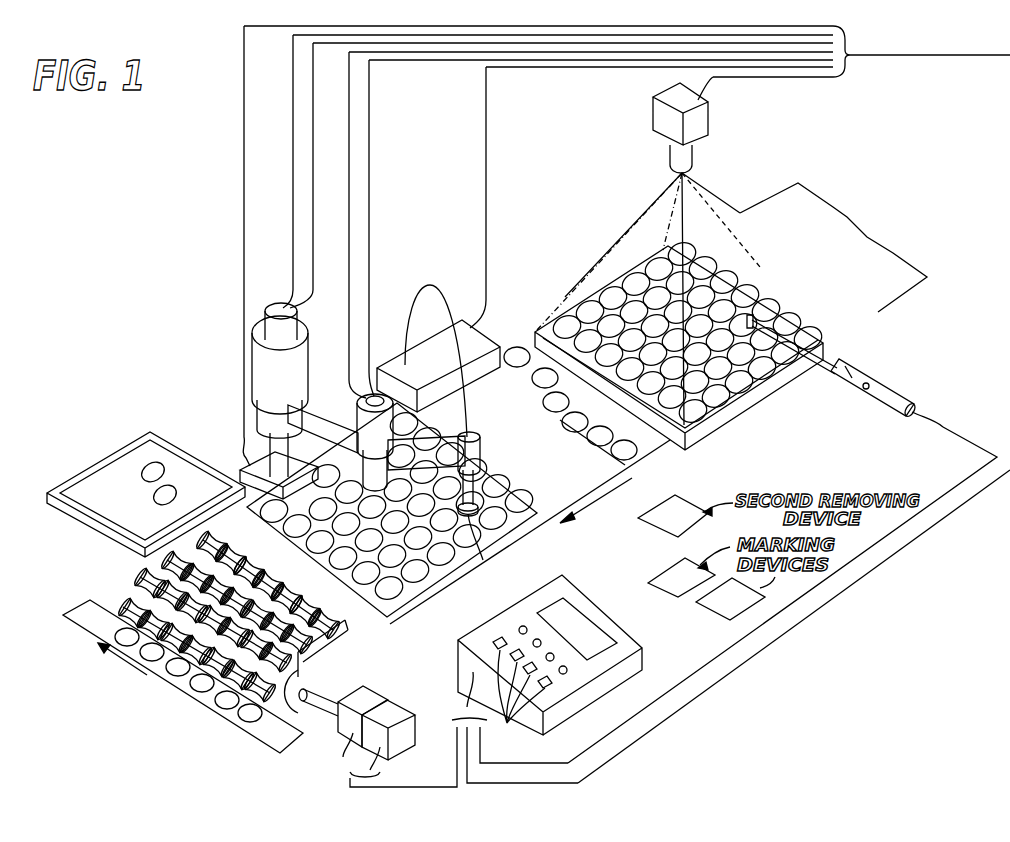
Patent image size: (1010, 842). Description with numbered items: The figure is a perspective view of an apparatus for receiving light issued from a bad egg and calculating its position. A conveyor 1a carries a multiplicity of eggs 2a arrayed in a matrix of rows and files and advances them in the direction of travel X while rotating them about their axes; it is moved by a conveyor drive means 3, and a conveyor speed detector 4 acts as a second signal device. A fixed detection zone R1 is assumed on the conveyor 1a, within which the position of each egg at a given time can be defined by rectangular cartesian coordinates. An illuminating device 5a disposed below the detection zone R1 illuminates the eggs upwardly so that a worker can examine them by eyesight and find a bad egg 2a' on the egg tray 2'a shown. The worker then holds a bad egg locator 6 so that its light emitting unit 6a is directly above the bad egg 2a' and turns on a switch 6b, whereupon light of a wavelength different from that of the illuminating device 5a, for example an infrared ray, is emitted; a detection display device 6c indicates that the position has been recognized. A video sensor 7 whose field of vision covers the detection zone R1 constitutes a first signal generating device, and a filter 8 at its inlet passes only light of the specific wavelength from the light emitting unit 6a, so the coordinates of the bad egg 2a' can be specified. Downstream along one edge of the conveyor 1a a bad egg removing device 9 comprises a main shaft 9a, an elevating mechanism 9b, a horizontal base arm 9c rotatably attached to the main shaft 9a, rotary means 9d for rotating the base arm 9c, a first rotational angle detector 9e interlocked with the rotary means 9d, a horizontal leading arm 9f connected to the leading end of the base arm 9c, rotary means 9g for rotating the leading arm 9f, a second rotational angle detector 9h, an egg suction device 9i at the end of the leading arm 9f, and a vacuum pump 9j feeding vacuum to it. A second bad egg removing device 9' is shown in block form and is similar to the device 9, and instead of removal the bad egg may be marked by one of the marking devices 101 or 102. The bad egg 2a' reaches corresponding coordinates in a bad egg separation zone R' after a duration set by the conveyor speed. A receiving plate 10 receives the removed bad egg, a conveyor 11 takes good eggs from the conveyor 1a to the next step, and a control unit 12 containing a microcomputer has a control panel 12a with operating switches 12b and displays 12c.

The conveyor 1a is at (417, 612).
The eggs 2a is at (533, 542).
The bad egg 2a' is at (493, 576).
The second egg tray 2'a is at (664, 349).
The conveyor drive means 3 is at (407, 703).
The conveyor speed detector 4 is at (367, 690).
The illuminating device 5a is at (703, 435).
The bad egg locator 6 is at (905, 400).
The light emitting unit 6a is at (757, 312).
The switch 6b is at (872, 382).
The detection display device 6c is at (850, 368).
The video sensor 7 is at (705, 108).
The filter 8 is at (695, 165).
The bad egg removing device 9 is at (602, 246).
The second bad egg removing device 9' is at (673, 502).
The main shaft 9a is at (270, 442).
The elevating mechanism 9b is at (248, 467).
The horizontal base arm 9c is at (310, 413).
The rotary means 9d is at (262, 366).
The first rotational angle detector 9e is at (297, 313).
The horizontal leading arm 9f is at (415, 445).
The rotary means 9g is at (362, 423).
The second rotational angle detector 9h is at (397, 370).
The egg suction device 9i is at (484, 452).
The vacuum pump 9j is at (487, 338).
The receiving plate 10 is at (108, 466).
The conveyor 11 is at (200, 700).
The control unit 12 is at (595, 695).
The control panel 12a is at (560, 585).
The operating switches 12b is at (517, 705).
The displays 12c is at (590, 633).
The marking device 101 is at (677, 593).
The marking device 102 is at (722, 607).
The bad egg separation zone R' is at (462, 596).
The detection zone R1 is at (748, 390).
The direction of travel X is at (596, 503).